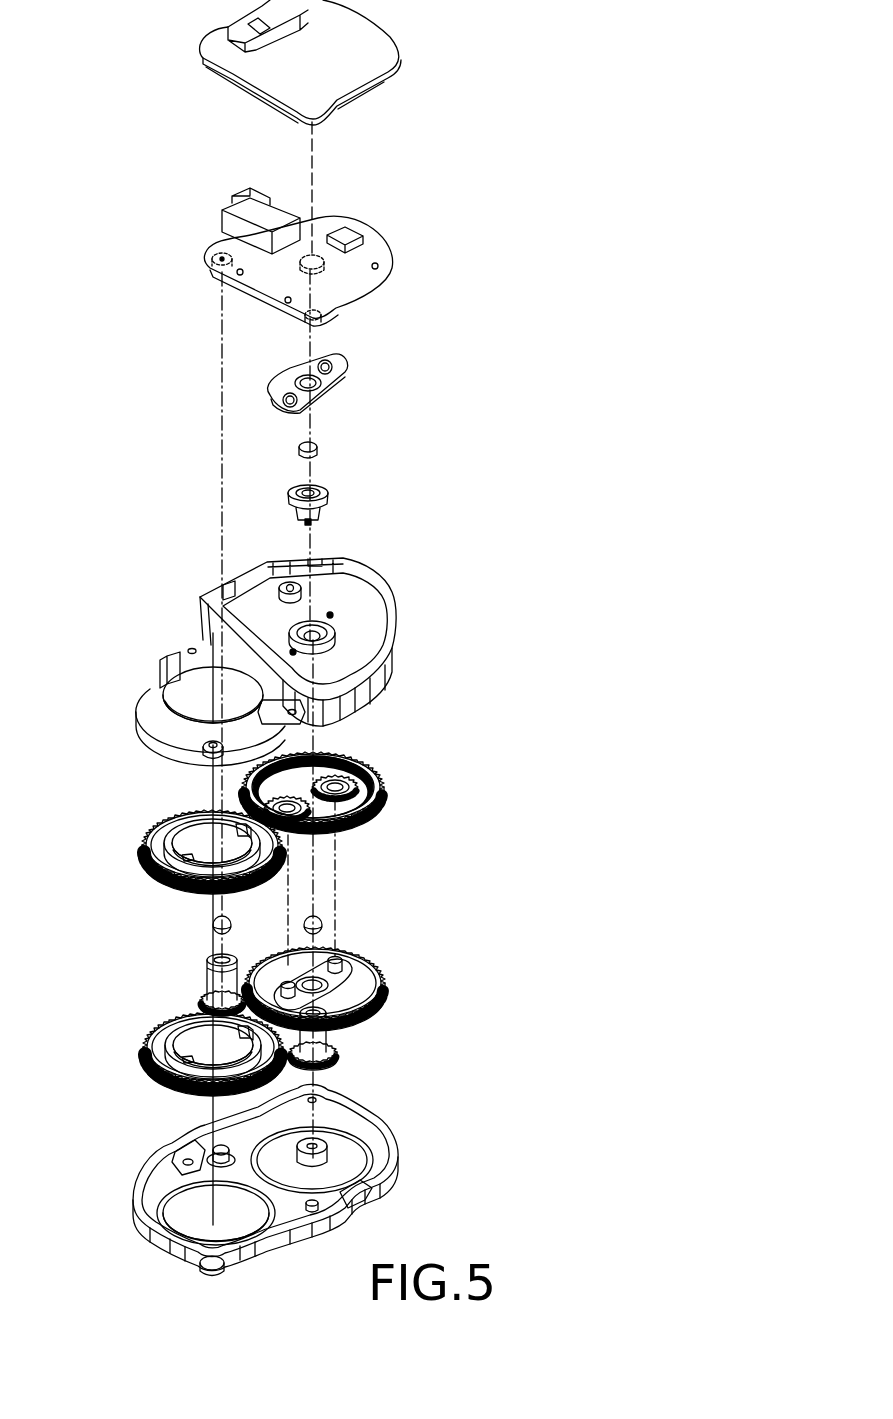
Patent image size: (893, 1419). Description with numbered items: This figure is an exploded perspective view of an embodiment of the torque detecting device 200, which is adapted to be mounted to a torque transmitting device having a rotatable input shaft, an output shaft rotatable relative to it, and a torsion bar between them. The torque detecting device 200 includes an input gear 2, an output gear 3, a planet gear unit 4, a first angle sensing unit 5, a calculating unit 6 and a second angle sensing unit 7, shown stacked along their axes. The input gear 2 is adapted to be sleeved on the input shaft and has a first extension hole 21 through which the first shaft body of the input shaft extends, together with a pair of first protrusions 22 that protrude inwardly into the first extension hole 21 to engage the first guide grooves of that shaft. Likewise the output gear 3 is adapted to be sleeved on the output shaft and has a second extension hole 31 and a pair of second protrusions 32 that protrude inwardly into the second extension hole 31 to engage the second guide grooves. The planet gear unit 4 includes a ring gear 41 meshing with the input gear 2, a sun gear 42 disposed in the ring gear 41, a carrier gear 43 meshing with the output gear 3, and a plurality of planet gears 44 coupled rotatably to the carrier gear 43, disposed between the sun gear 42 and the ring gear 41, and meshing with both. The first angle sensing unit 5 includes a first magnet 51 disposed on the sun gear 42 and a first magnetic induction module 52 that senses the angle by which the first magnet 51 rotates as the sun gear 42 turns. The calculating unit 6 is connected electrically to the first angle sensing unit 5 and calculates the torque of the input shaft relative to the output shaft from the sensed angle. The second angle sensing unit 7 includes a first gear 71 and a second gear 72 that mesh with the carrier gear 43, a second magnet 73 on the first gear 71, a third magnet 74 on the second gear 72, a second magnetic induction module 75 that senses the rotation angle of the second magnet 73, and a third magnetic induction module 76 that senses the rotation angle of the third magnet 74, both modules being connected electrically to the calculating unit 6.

The torque detecting device 200 is at (440, 128).
The calculating unit 6 is at (338, 212).
The third magnetic induction module 76 is at (205, 250).
The first magnetic induction module 52 is at (323, 263).
The second magnetic induction module 75 is at (345, 300).
The first angle sensing unit 5 is at (338, 446).
The first magnet 51 is at (298, 448).
The sun gear 42 is at (298, 516).
The planet gears 44 is at (288, 778).
The ring gear 41 is at (386, 792).
The planet gear unit 4 is at (382, 835).
The input gear 2 is at (128, 842).
The first extension hole 21 is at (178, 810).
The first protrusions 22 is at (236, 826).
The third magnet 74 is at (213, 924).
The second magnet 73 is at (320, 919).
The second angle sensing unit 7 is at (338, 922).
The second gear 72 is at (205, 990).
The second extension hole 31 is at (172, 1020).
The output gear 3 is at (126, 1055).
The second protrusions 32 is at (242, 1032).
The carrier gear 43 is at (390, 1005).
The first gear 71 is at (338, 1055).